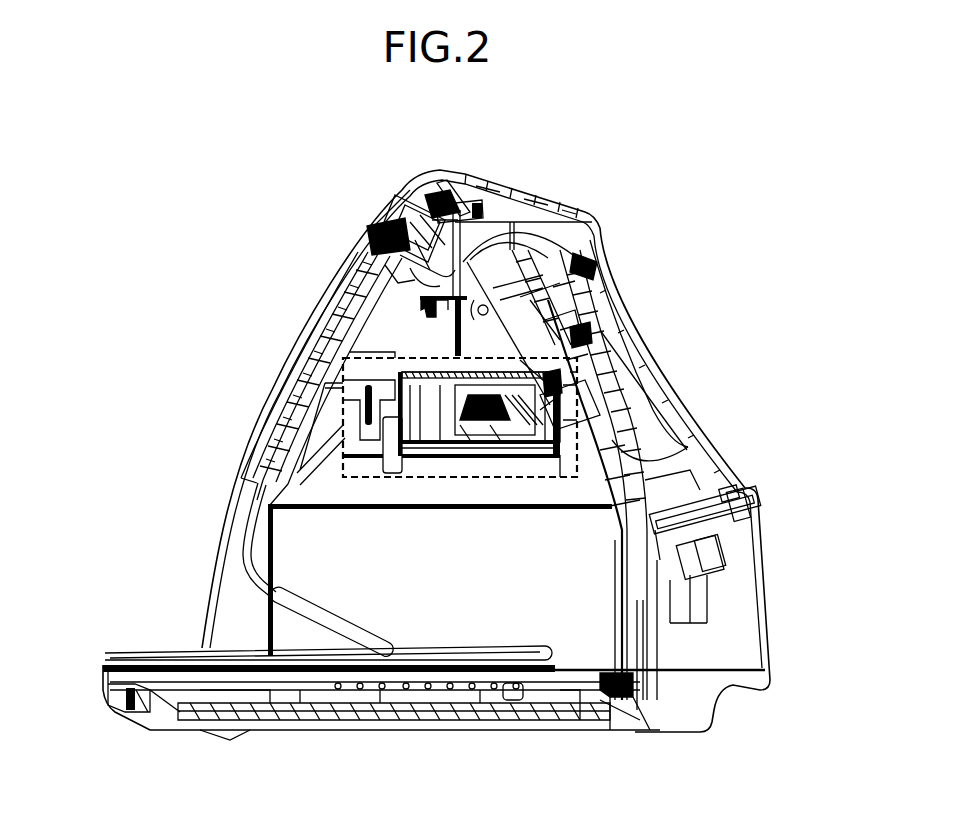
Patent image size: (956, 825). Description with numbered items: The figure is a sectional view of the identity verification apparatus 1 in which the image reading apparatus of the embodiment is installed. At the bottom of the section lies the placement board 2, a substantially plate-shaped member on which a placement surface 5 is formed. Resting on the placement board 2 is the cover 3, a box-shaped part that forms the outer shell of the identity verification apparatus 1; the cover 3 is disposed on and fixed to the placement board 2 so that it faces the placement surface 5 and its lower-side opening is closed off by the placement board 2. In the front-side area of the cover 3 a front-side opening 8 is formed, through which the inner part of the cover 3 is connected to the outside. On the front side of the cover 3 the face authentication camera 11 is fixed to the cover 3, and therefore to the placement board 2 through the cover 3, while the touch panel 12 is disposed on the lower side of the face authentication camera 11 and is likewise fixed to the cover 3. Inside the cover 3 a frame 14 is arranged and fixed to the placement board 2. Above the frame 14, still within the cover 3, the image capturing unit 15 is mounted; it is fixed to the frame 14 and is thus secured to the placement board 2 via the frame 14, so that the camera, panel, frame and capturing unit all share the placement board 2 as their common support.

The identity verification apparatus 1 is at (596, 160).
The placement board 2 is at (130, 718).
The cover 3 is at (683, 412).
The placement surface 5 is at (347, 655).
The front-side opening 8 is at (183, 583).
The face authentication camera 11 is at (372, 227).
The touch panel 12 is at (313, 319).
The frame 14 is at (252, 534).
The image capturing unit 15 is at (515, 352).